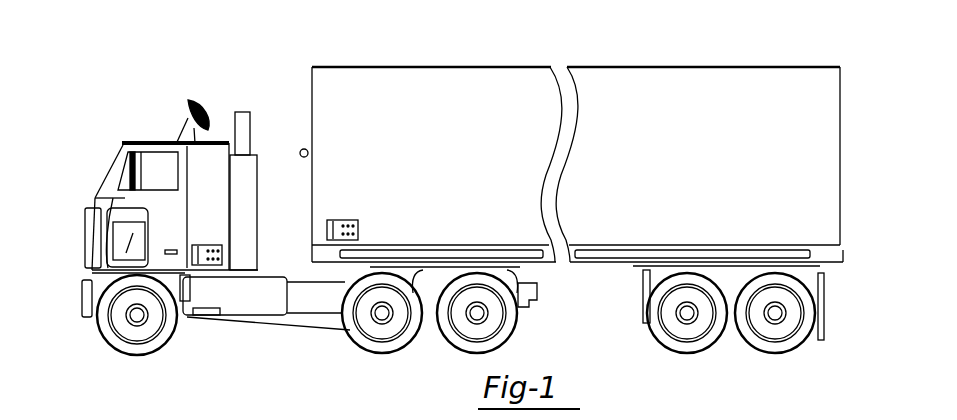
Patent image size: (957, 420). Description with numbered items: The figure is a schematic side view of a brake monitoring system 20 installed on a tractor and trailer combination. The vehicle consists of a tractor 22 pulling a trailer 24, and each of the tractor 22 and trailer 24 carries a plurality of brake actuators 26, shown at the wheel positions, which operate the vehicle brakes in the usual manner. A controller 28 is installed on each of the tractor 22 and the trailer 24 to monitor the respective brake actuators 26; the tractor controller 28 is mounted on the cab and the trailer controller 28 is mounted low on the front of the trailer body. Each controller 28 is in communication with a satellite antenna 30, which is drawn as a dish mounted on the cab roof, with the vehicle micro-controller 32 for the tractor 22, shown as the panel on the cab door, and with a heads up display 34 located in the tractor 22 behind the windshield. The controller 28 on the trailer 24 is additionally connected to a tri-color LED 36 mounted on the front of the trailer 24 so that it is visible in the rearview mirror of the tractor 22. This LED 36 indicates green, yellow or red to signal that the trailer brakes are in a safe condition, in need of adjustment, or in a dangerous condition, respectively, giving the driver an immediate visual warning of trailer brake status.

The brake monitoring system 20 is at (113, 128).
The tractor 22 is at (91, 196).
The trailer 24 is at (414, 64).
The brake actuators 26 is at (421, 272).
The controller 28 is at (207, 242).
The satellite antenna 30 is at (195, 98).
The vehicle micro-controller 32 is at (149, 215).
The heads up display 34 is at (136, 166).
The tri-color LED 36 is at (300, 148).